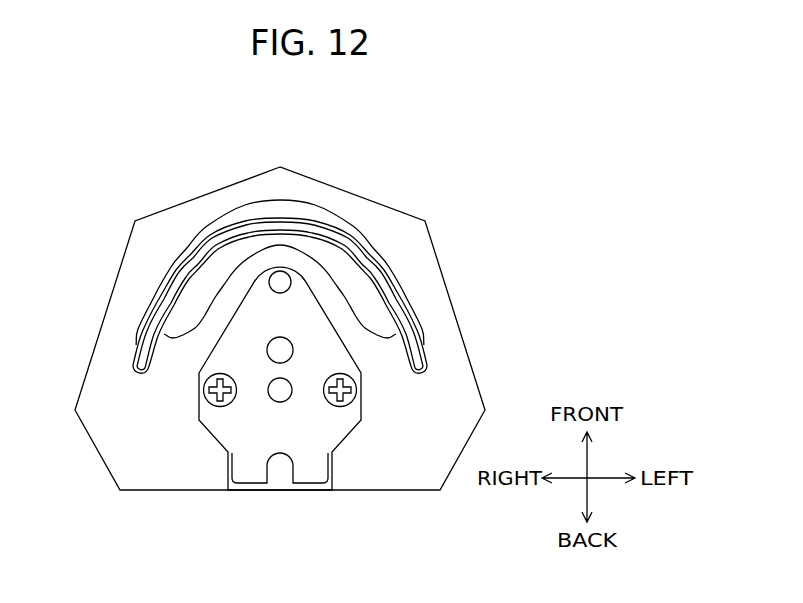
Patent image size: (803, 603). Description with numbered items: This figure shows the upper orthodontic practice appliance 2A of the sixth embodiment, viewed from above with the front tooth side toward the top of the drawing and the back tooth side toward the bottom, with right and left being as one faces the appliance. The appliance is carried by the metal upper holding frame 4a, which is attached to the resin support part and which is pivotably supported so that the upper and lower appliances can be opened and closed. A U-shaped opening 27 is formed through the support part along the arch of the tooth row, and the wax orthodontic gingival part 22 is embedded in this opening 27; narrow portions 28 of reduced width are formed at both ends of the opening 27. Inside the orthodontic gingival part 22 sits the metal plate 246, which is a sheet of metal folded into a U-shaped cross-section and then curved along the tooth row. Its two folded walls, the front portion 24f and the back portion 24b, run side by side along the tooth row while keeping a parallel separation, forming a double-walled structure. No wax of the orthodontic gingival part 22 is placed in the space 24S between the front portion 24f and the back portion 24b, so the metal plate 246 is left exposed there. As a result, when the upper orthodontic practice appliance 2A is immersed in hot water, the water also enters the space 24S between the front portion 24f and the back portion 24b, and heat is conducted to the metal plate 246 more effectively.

The upper orthodontic practice appliance 2A is at (356, 143).
The orthodontic gingival part 22 is at (368, 250).
The opening 27 is at (241, 212).
The front portion 24f is at (190, 258).
The back portion 24b is at (174, 303).
The space 24S is at (298, 224).
The metal plate 246 is at (387, 281).
The narrow portion 28 is at (146, 374).
The upper holding frame 4a is at (252, 465).